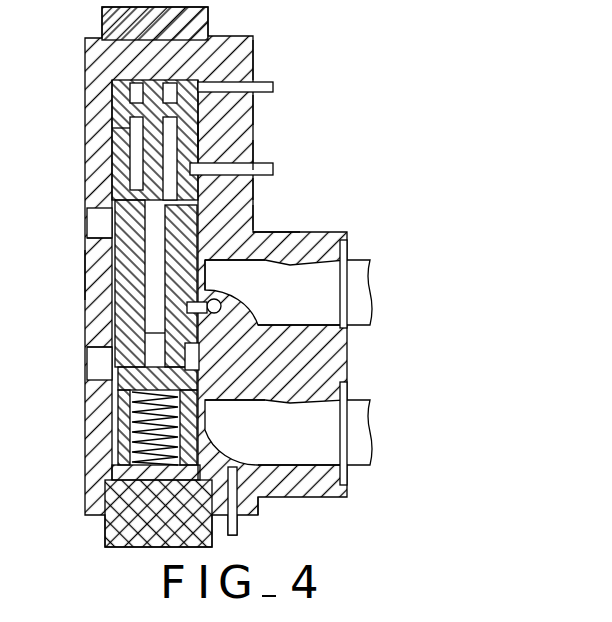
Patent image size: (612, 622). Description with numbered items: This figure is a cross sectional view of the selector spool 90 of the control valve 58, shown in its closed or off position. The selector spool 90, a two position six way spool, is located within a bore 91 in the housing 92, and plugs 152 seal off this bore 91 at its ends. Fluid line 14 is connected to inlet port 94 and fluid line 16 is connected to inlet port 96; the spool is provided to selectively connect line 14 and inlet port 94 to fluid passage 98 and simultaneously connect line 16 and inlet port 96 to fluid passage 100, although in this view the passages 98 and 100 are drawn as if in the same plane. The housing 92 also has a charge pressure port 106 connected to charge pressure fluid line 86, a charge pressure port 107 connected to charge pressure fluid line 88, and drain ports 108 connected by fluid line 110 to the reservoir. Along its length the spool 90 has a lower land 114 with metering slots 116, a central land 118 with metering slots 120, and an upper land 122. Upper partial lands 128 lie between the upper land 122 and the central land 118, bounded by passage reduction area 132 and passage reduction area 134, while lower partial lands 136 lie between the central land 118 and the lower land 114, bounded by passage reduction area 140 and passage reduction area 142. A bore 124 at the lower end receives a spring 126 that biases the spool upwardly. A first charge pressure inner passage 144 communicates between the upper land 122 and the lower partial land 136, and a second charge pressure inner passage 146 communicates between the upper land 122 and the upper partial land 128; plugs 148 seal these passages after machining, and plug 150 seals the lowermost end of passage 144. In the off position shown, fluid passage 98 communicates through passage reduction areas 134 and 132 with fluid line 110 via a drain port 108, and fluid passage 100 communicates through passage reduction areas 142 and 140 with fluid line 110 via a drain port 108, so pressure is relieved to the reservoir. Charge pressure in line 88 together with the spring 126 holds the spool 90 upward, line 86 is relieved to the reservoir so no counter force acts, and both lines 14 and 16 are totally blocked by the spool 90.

The fluid line 14 is at (358, 262).
The fluid line 16 is at (357, 462).
The control valve 58 is at (256, 39).
The charge pressure fluid line 86 is at (273, 86).
The charge pressure fluid line 88 is at (238, 528).
The selector spool 90 is at (243, 116).
The bore 91 is at (112, 128).
The housing 92 is at (240, 194).
The inlet port 94 is at (316, 295).
The inlet port 96 is at (309, 426).
The fluid passage 98 is at (90, 220).
The fluid passage 100 is at (97, 367).
The charge pressure port 106 is at (238, 76).
The charge pressure port 107 is at (240, 502).
The drain port 108 is at (243, 165).
The fluid line 110 is at (273, 169).
The lower land 114 is at (110, 413).
The metering slots 116 is at (201, 358).
The central land 118 is at (100, 272).
The metering slots 120 is at (240, 214).
The upper land 122 is at (200, 133).
The bore 124 is at (92, 443).
The spring 126 is at (110, 466).
The upper partial lands 128 is at (112, 192).
The passage reduction area 132 is at (108, 165).
The passage reduction area 134 is at (108, 218).
The lower partial lands 136 is at (120, 322).
The passage reduction area 140 is at (92, 308).
The passage reduction area 142 is at (100, 354).
The first charge pressure inner passage 144 is at (250, 229).
The second charge pressure inner passage 146 is at (115, 150).
The plugs 148 is at (168, 80).
The plug 150 is at (110, 388).
The plugs 152 is at (106, 12).